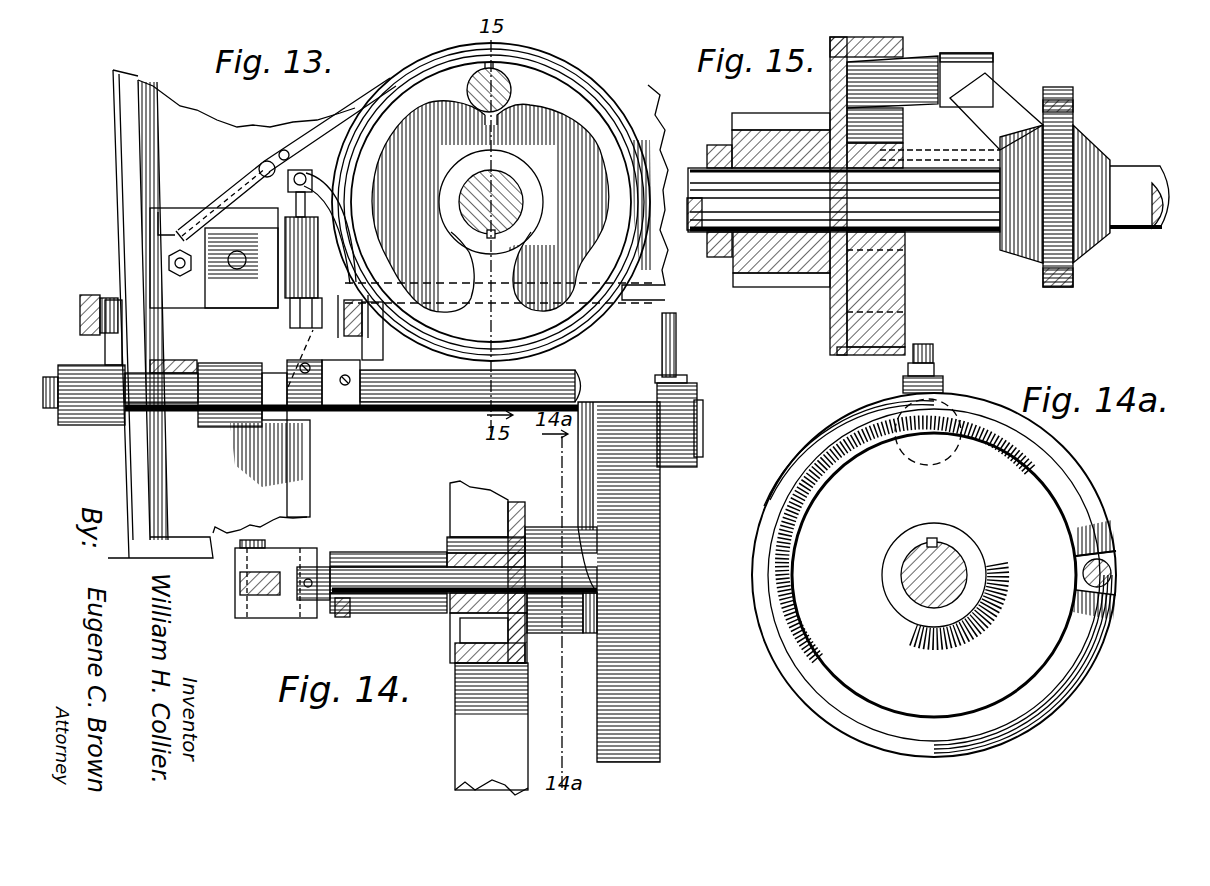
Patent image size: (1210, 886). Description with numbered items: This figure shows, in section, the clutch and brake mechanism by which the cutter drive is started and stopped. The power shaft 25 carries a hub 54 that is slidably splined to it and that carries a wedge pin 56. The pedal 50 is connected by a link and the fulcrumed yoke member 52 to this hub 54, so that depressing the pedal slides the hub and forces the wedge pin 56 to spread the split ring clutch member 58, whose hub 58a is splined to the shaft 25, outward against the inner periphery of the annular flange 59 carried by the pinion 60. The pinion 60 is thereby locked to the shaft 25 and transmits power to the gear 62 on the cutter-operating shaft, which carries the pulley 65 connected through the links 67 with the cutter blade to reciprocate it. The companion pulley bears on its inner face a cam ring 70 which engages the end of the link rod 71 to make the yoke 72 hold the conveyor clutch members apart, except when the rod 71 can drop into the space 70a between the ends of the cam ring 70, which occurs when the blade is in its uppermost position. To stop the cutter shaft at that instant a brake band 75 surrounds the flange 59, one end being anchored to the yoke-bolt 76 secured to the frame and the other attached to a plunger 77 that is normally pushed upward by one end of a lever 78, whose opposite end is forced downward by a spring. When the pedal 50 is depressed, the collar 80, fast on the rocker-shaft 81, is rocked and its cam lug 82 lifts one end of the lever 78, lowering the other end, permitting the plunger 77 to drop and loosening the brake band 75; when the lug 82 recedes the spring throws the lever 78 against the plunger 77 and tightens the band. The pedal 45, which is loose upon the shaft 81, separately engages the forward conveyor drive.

In FIG. 13, the power shaft 25 is at (510, 190).
In FIG. 14A, the power shaft 25 is at (940, 581).
In FIG. 15, the power shaft 25 is at (1142, 230).
In FIG. 13, the pedal 45 is at (98, 300).
In FIG. 13, the pedal 50 is at (348, 300).
In FIG. 15, the yoke member 52 is at (1073, 100).
In FIG. 15, the hub 54 is at (1095, 142).
In FIG. 13, the wedge pin 56 is at (508, 80).
In FIG. 15, the wedge pin 56 is at (917, 68).
In FIG. 13, the split ring clutch member 58 is at (588, 112).
In FIG. 13, the hub 58a is at (538, 214).
In FIG. 15, the hub 58a is at (895, 146).
In FIG. 15, the annular flange 59 is at (905, 58).
In FIG. 15, the pinion 60 is at (752, 116).
In FIG. 14A, the gear 62 is at (945, 362).
In FIG. 14, the pulley 65 is at (648, 542).
In FIG. 14, the links 67 is at (674, 346).
In FIG. 14, the cam ring 70 is at (584, 402).
In FIG. 14A, the cam ring 70 is at (1082, 623).
In FIG. 14, the space 70a is at (600, 606).
In FIG. 14A, the space 70a is at (1104, 548).
In FIG. 14, the link rod 71 is at (537, 565).
In FIG. 14A, the link rod 71 is at (1110, 566).
In FIG. 14, the yoke 72 is at (233, 586).
In FIG. 13, the brake band 75 is at (346, 116).
In FIG. 15, the brake band 75 is at (862, 356).
In FIG. 13, the yoke-bolt 76 is at (240, 190).
In FIG. 13, the plunger 77 is at (296, 200).
In FIG. 13, the lever 78 is at (345, 386).
In FIG. 13, the collar 80 is at (372, 412).
In FIG. 13, the rocker-shaft 81 is at (353, 400).
In FIG. 13, the cam lug 82 is at (306, 400).